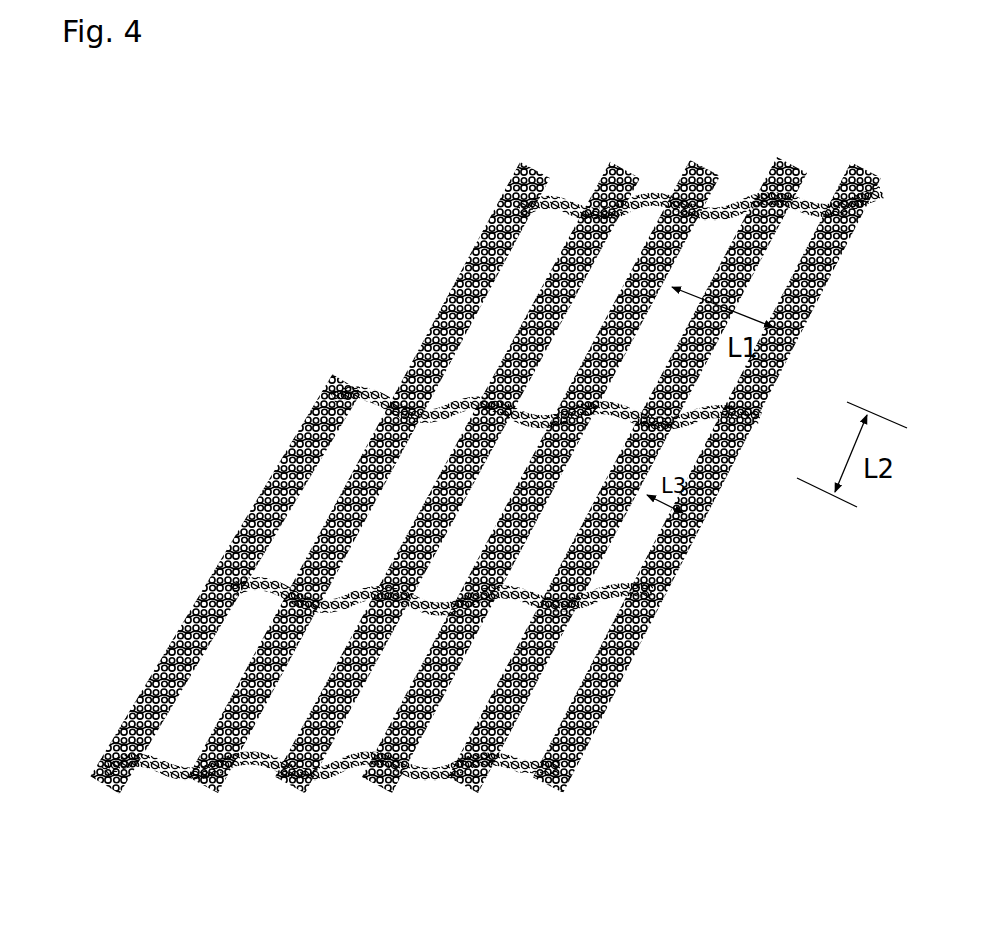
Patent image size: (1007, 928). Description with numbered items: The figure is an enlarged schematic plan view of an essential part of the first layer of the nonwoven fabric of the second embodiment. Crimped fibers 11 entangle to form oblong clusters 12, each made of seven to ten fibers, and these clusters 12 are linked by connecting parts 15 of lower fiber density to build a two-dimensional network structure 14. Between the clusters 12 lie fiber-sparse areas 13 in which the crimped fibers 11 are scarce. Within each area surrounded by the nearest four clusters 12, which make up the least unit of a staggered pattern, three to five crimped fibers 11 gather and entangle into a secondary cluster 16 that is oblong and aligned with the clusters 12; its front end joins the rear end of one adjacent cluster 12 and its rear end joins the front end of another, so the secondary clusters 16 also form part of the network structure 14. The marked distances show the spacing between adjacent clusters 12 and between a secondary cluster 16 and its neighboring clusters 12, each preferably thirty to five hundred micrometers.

The crimped fibers 11 is at (610, 714).
The clusters 12 is at (505, 765).
The fiber-sparse areas 13 is at (562, 528).
The two-dimensional network structure 14 is at (128, 720).
The connecting parts 15 is at (573, 192).
The secondary clusters 16 is at (360, 500).